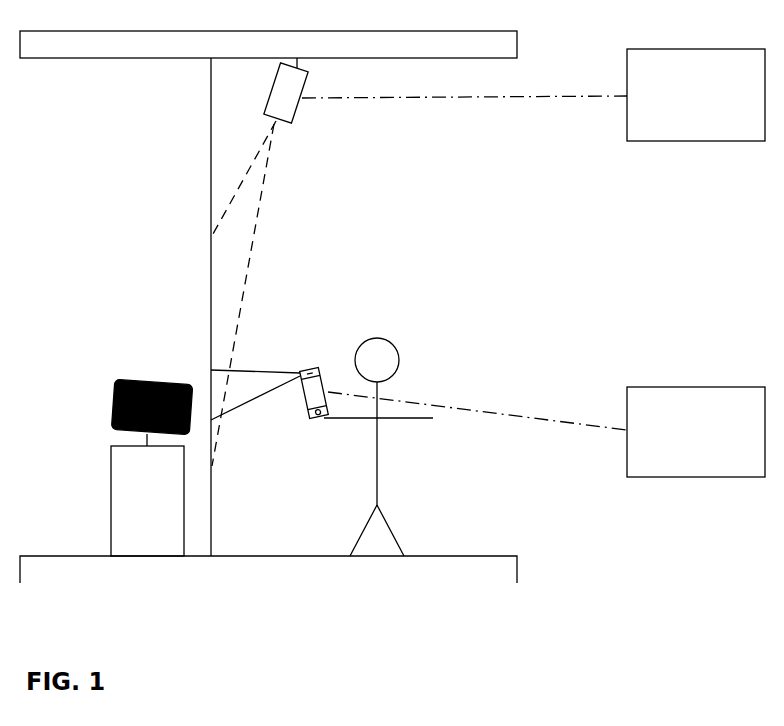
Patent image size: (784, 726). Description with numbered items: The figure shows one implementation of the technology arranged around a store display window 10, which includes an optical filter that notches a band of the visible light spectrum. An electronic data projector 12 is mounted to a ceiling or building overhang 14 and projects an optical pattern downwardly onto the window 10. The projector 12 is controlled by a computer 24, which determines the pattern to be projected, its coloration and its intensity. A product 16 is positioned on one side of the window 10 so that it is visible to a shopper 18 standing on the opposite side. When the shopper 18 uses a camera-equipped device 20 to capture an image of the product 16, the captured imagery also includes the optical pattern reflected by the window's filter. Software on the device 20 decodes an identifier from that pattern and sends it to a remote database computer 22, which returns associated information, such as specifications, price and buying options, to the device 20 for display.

The store display window 10 is at (211, 135).
The electronic data projector 12 is at (300, 108).
The ceiling or building overhang 14 is at (417, 59).
The product 16 is at (112, 389).
The shopper 18 is at (378, 445).
The camera-equipped device 20 is at (305, 398).
The remote database computer 22 is at (670, 478).
The computer 24 is at (670, 142).